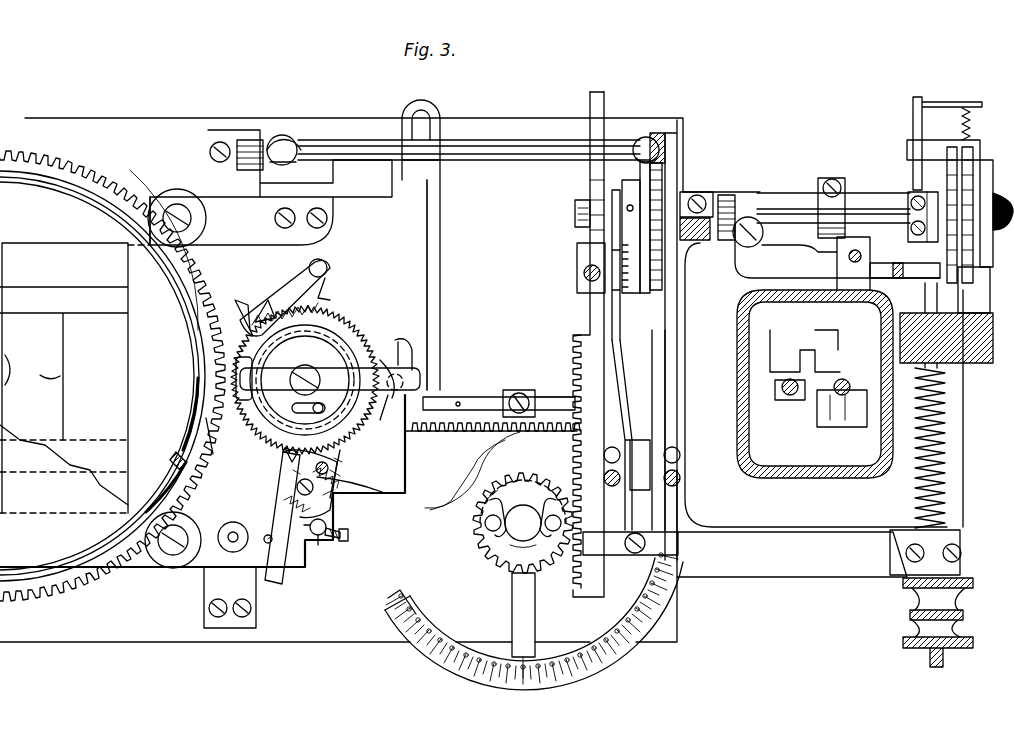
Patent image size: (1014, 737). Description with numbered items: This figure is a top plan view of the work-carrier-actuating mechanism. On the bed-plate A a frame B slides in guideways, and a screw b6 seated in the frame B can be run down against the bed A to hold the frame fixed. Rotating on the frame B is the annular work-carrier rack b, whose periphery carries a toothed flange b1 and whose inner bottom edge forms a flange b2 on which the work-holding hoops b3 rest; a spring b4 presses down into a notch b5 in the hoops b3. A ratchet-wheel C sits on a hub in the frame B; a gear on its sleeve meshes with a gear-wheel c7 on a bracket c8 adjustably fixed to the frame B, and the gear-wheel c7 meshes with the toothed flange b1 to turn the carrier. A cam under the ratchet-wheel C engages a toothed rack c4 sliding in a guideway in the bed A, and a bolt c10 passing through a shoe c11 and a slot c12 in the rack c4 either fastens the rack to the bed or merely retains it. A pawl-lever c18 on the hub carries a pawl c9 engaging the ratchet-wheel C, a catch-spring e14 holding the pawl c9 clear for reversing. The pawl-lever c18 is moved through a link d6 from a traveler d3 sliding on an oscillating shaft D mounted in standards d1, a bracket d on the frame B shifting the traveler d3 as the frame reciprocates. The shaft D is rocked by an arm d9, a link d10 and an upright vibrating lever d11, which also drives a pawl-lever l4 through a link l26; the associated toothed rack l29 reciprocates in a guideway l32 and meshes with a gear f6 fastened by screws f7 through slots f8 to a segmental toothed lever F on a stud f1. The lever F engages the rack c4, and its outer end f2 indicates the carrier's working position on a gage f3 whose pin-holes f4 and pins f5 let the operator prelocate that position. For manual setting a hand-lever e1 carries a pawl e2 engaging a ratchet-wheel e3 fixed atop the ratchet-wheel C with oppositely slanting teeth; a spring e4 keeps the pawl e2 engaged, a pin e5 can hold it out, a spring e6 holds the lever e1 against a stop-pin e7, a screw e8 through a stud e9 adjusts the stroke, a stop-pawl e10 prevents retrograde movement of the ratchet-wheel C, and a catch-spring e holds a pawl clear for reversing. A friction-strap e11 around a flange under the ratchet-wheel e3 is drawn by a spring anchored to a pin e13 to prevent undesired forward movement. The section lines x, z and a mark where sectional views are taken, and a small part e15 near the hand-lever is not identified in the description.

The frame B is at (205, 572).
The annular work-carrier rack b is at (55, 575).
The flange b2 is at (192, 355).
The work-holding hoops b3 is at (194, 398).
The spring b4 is at (165, 472).
The notch b5 is at (176, 458).
The screw b6 is at (228, 527).
The toothed flange b1 is at (208, 470).
The section line x x is at (176, 450).
The section line z z is at (356, 272).
The bracket d is at (270, 188).
The standards d1 is at (283, 134).
The shaft D is at (528, 160).
The traveler d3 is at (436, 122).
The link d6 is at (436, 252).
The arm d9 is at (660, 148).
The link d10 is at (677, 165).
The upright vibrating lever d11 is at (633, 440).
The bed-plate A is at (495, 294).
The ratchet-wheel C is at (356, 420).
The pawl-lever c18 is at (328, 385).
The ratchet-wheel e3 is at (340, 332).
The pawl c9 is at (388, 355).
The catch-spring e14 is at (408, 340).
The gear-wheel c7 is at (255, 292).
The bracket c8 is at (258, 316).
The adjustable friction-strap e11 is at (245, 318).
The pin e13 is at (330, 263).
The pawl e2 is at (290, 457).
The pin e5 is at (293, 472).
The hand-lever e1 is at (277, 560).
The catch-spring e is at (355, 475).
The stop-pawl e10 is at (340, 460).
The pin e15 is at (330, 473).
The spring e4 is at (323, 495).
The spring e6 is at (268, 535).
The stop-pin e7 is at (267, 542).
The stud e9 is at (319, 545).
The screw e8 is at (348, 537).
The slot c12 is at (462, 402).
The bolt c10 is at (519, 394).
The shoe c11 is at (538, 397).
The toothed rack c4 is at (490, 439).
The segmental toothed lever F is at (499, 502).
The stud f1 is at (523, 510).
The screws f7 is at (485, 522).
The gear f6 is at (523, 546).
The slots f8 is at (490, 500).
The gage f3 is at (565, 682).
The pin-holes f4 is at (445, 650).
The pins f5 is at (520, 664).
The outer end of lever F f2 is at (525, 684).
The toothed rack l29 is at (577, 270).
The pawl-lever l4 is at (623, 222).
The link l26 is at (622, 353).
The guideway l32 is at (678, 545).
The section line a a is at (578, 213).